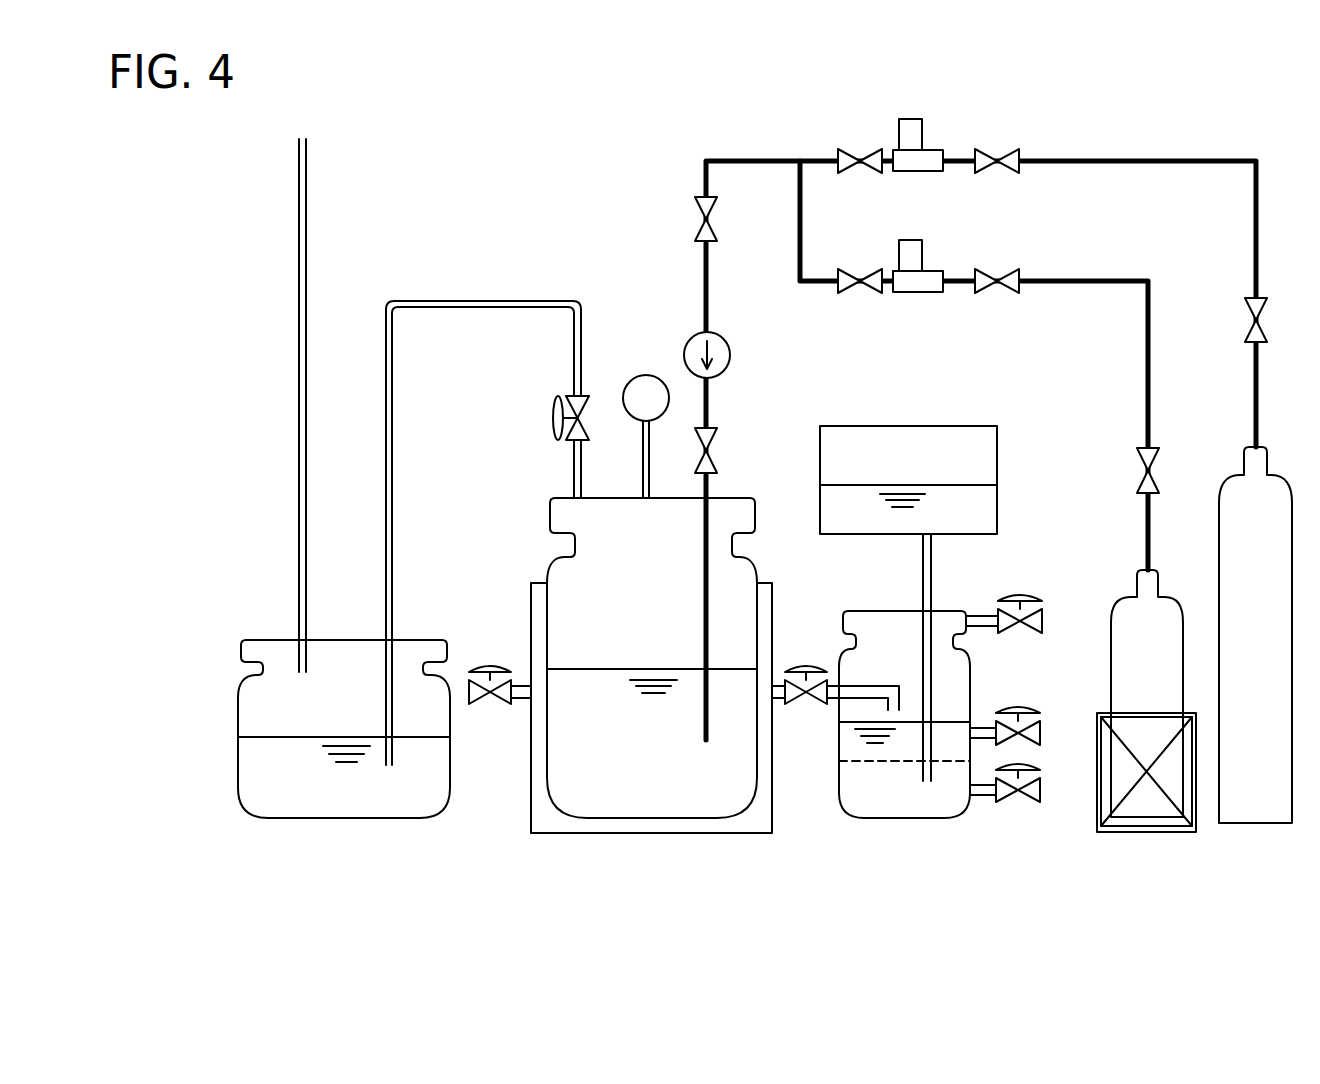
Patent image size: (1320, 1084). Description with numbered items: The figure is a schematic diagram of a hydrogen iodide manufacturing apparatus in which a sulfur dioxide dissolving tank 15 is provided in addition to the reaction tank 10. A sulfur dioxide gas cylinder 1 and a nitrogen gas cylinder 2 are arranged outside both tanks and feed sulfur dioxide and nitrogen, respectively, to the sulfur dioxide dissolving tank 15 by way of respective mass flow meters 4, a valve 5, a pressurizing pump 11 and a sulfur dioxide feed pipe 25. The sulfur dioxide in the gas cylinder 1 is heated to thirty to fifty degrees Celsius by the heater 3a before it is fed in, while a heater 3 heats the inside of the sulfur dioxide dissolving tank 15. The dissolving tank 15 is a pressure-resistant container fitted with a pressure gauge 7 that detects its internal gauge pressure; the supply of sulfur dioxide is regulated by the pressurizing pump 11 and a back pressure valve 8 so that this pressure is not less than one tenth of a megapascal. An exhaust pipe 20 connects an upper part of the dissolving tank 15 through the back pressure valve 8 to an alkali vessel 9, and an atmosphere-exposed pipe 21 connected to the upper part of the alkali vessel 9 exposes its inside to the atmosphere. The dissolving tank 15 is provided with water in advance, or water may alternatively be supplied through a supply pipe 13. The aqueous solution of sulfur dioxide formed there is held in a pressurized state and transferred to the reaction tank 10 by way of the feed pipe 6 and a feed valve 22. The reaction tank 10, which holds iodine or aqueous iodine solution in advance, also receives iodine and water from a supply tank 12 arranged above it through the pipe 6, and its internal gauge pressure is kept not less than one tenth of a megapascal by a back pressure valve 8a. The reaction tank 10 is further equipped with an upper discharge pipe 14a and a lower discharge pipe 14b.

The sulfur dioxide gas cylinder 1 is at (1123, 610).
The nitrogen gas cylinder 2 is at (1246, 815).
The heater 3 is at (554, 836).
The heater 3a is at (1115, 832).
The mass flow meter 4 is at (943, 150).
The valve 5 is at (694, 213).
The feed pipe 6 is at (830, 684).
The pressure gauge 7 is at (647, 375).
The back pressure valve 8 is at (552, 418).
The back pressure valve 8a is at (1012, 598).
The alkali vessel 9 is at (383, 820).
The reaction tank 10 is at (893, 820).
The pressurizing pump 11 is at (732, 353).
The supply tank 12 is at (1000, 437).
The supply pipe 13 is at (519, 704).
The upper discharge pipe 14a is at (1012, 710).
The lower discharge pipe 14b is at (1030, 804).
The sulfur dioxide dissolving tank 15 is at (758, 567).
The exhaust pipe 20 is at (393, 470).
The atmosphere-exposed pipe 21 is at (296, 430).
The feed valve 22 is at (790, 704).
The sulfur dioxide feed pipe 25 is at (712, 486).